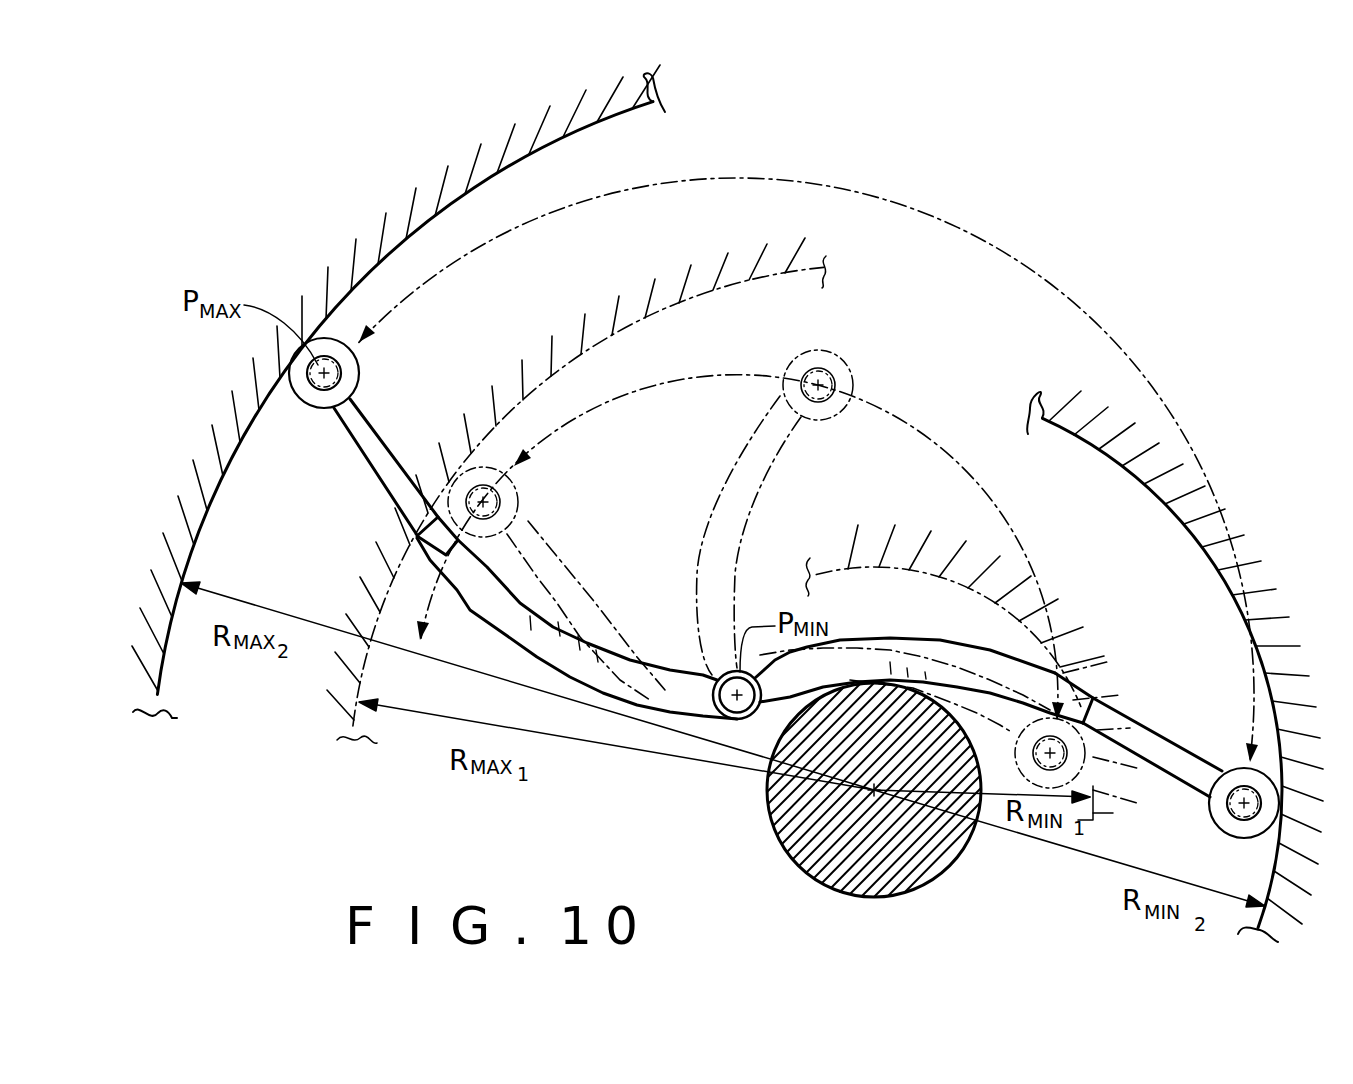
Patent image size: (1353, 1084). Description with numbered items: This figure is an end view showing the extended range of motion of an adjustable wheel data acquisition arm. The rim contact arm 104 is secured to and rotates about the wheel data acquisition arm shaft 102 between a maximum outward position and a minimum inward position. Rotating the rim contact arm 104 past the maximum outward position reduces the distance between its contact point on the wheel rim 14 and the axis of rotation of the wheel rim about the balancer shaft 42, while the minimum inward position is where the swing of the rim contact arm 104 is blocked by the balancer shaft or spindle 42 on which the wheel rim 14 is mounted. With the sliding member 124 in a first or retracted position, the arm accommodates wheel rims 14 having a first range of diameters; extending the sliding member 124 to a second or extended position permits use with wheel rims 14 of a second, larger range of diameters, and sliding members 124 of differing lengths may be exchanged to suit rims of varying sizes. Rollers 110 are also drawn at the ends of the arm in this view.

The wheel rim 14 is at (230, 512).
The balancer shaft 42 is at (945, 852).
The shaft 102 is at (736, 695).
The rim contact arm 104 is at (515, 627).
The roller 110 is at (360, 366).
The sliding member 124 is at (757, 599).